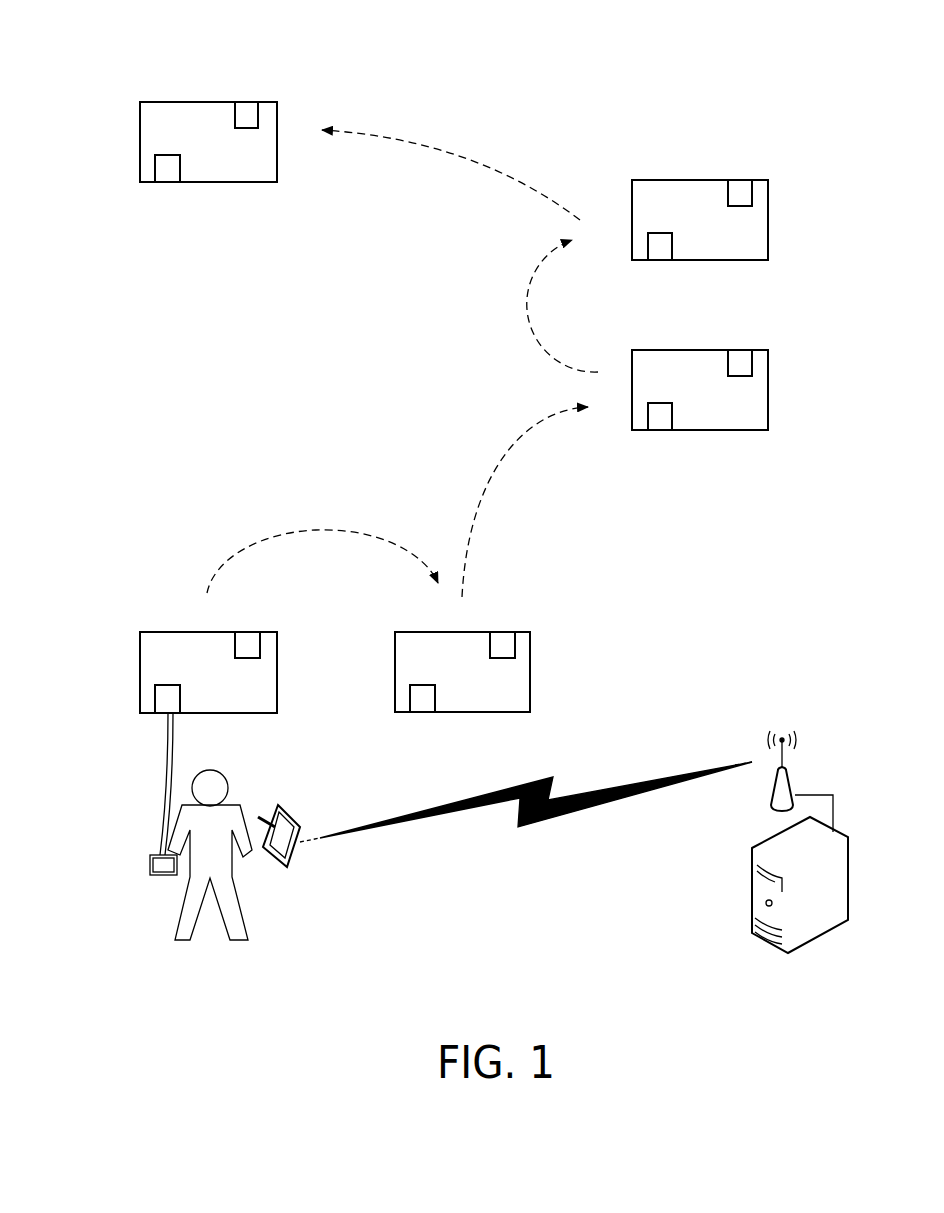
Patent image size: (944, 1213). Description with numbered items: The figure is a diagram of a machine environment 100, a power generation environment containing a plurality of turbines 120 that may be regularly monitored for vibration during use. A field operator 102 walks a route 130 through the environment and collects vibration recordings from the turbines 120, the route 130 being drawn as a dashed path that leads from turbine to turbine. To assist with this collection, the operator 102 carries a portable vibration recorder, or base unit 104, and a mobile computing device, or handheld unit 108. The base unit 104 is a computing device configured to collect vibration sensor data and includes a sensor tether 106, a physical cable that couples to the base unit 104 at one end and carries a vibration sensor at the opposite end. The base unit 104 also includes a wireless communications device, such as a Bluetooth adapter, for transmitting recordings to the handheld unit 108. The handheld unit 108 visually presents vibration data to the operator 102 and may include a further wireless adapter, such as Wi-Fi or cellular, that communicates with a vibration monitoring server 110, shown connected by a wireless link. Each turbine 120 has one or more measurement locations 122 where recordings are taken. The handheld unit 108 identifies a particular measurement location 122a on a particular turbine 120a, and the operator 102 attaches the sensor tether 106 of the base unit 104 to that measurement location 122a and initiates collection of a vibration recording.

The machine environment 100 is at (698, 53).
The field operator 102 is at (197, 960).
The portable vibration recorder 104 is at (152, 886).
The sensor tether 106 is at (150, 782).
The mobile computing device 108 is at (291, 884).
The vibration monitoring server 110 is at (815, 937).
The turbine 120 is at (207, 183).
The particular turbine 120a is at (140, 652).
The measurement location 122 is at (226, 636).
The particular measurement location 122a is at (190, 706).
The route 130 is at (388, 536).